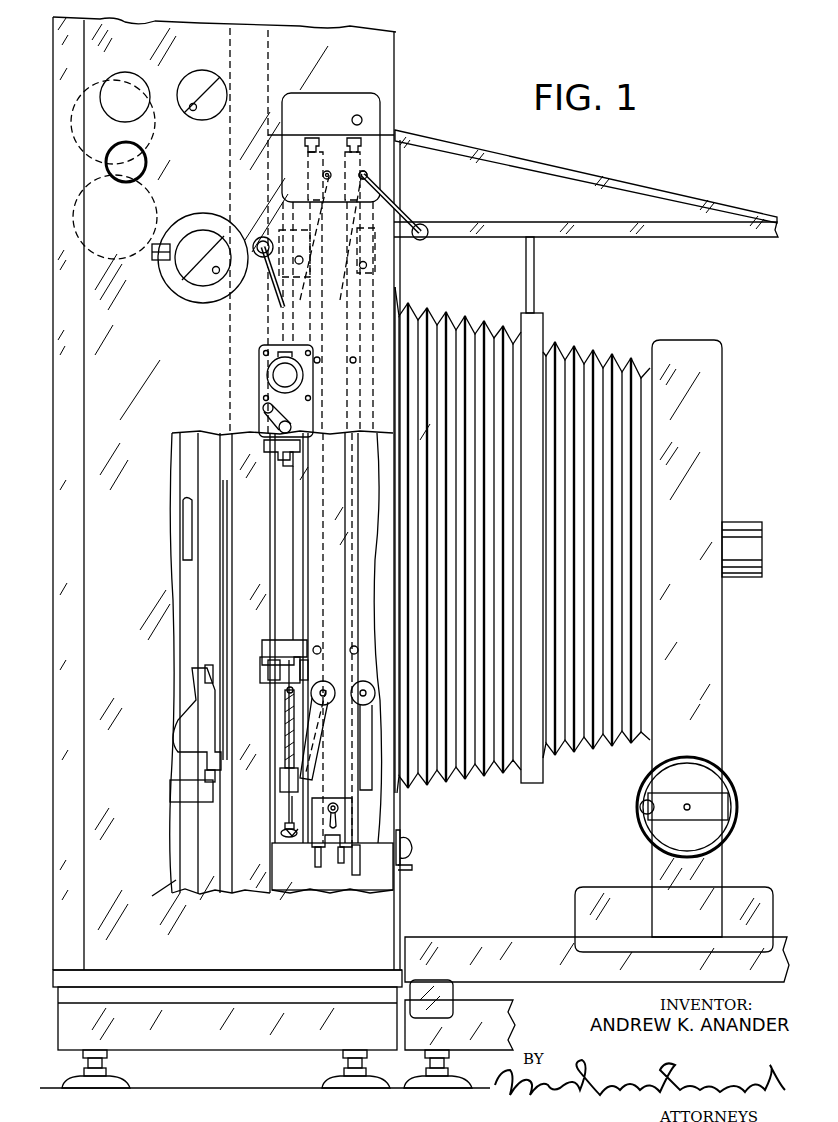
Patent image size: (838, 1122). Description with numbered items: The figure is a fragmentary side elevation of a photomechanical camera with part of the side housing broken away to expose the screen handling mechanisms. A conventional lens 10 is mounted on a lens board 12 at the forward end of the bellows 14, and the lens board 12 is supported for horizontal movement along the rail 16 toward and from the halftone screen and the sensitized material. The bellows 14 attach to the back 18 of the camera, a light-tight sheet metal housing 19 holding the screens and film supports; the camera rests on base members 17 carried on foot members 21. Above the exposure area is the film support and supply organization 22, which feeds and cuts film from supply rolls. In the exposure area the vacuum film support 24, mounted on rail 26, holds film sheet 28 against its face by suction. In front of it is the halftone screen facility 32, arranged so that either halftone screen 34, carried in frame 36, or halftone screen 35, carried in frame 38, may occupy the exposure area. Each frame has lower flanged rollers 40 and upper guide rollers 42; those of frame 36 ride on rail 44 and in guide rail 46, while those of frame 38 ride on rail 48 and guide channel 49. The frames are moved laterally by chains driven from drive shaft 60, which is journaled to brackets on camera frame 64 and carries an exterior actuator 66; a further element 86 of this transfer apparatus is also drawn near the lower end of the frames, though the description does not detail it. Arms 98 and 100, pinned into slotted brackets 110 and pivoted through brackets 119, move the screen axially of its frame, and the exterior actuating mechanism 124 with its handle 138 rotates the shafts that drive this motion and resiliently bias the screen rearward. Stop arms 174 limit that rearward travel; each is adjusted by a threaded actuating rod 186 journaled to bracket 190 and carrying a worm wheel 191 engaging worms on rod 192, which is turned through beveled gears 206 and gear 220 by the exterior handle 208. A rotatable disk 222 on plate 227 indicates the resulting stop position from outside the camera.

The lens 10 is at (742, 522).
The lens board 12 is at (722, 657).
The bellows 14 is at (568, 745).
The rail 16 is at (518, 937).
The base members 17 is at (415, 1030).
The camera back 18 is at (49, 914).
The housing 19 is at (154, 894).
The foot members 21 is at (415, 1068).
The film support and supply organization 22 is at (171, 155).
The vacuum film support 24 is at (196, 576).
The rail 26 is at (218, 792).
The film sheet 28 is at (214, 627).
The halftone screen facility 32 is at (301, 879).
The halftone screen 34 is at (290, 718).
The halftone screen 35 is at (353, 568).
The frame 36 is at (322, 488).
The frame 38 is at (360, 448).
The flanged rollers 40 is at (352, 876).
The guide rollers 42 is at (360, 132).
The rail 44 is at (321, 864).
The guide rail 46 is at (312, 142).
The rail 48 is at (343, 864).
The guide channel 49 is at (341, 140).
The drive shaft 60 is at (412, 846).
The camera frame 64 is at (232, 853).
The actuator 66 is at (405, 880).
The lock block 86 is at (352, 816).
The arms 98 is at (368, 746).
The arms 100 is at (300, 224).
The brackets 110 is at (280, 300).
The brackets 119 is at (361, 690).
The actuating mechanism 124 is at (342, 87).
The handle 138 is at (404, 208).
The stop arms 174 is at (270, 677).
The actuating rod 186 is at (284, 640).
The bracket 190 is at (262, 648).
The worm wheel 191 is at (295, 683).
The rod 192 is at (296, 566).
The beveled gears 206 is at (290, 829).
The handle 208 is at (263, 416).
The gear 220 is at (281, 464).
The rotatable disk 222 is at (268, 368).
The plate 227 is at (259, 385).